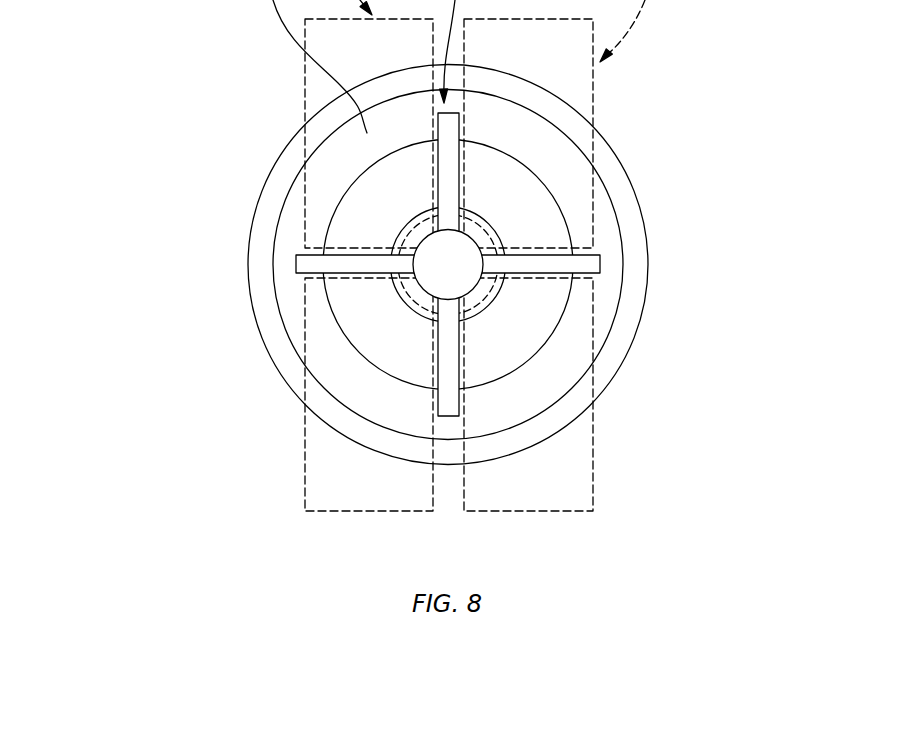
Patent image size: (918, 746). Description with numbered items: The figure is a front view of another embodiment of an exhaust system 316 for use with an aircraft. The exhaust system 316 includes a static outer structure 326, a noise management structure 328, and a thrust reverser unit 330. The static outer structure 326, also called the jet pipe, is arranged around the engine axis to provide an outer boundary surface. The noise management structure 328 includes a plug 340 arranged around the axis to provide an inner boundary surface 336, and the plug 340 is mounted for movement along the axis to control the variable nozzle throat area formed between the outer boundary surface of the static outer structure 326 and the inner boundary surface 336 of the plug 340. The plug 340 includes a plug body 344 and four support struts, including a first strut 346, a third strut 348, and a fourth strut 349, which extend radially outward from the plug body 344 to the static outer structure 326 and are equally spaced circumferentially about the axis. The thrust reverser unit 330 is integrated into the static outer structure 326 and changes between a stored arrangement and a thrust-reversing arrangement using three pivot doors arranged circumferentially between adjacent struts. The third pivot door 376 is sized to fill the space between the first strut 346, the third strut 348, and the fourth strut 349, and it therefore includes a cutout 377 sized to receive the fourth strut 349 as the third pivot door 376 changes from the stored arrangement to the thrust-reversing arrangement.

The exhaust system 316 is at (124, 117).
The static outer structure 326 is at (277, 119).
The noise management structure 328 is at (314, 320).
The thrust reverser unit 330 is at (662, 92).
The inner boundary surface 336 is at (402, 227).
The plug 340 is at (352, 328).
The plug body 344 is at (393, 322).
The first strut 346 is at (280, 262).
The third strut 348 is at (617, 262).
The fourth strut 349 is at (444, 434).
The third pivot door 376 is at (610, 477).
The cutout 377 is at (470, 353).